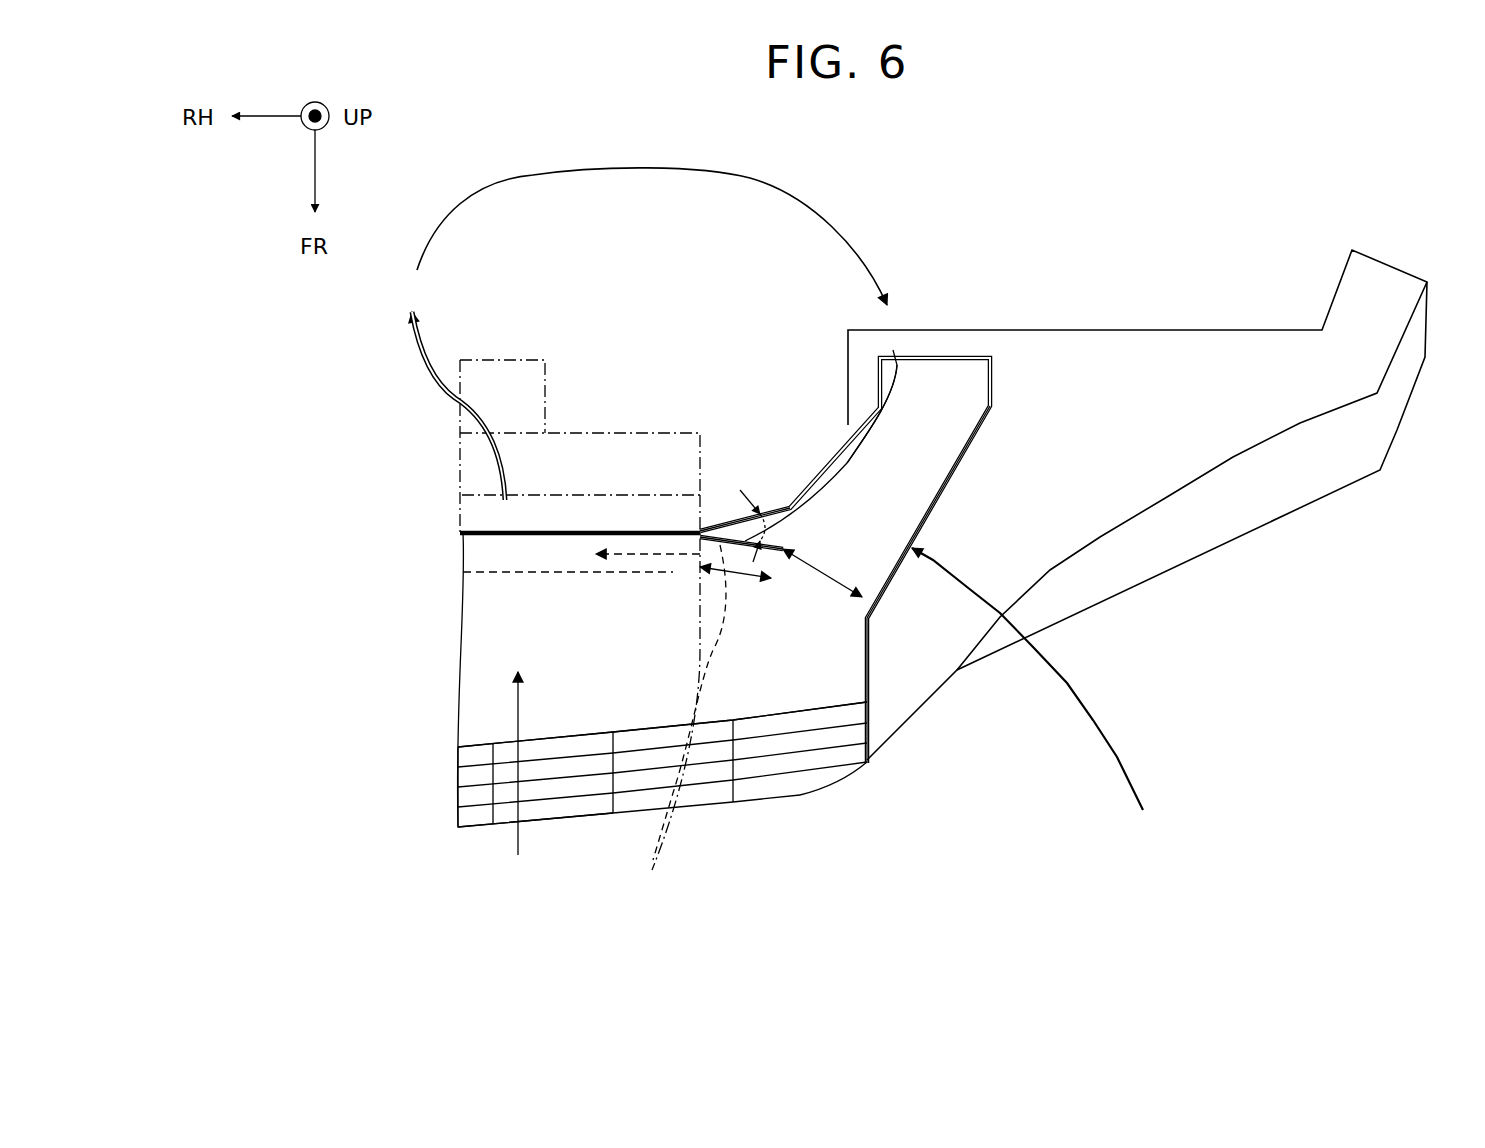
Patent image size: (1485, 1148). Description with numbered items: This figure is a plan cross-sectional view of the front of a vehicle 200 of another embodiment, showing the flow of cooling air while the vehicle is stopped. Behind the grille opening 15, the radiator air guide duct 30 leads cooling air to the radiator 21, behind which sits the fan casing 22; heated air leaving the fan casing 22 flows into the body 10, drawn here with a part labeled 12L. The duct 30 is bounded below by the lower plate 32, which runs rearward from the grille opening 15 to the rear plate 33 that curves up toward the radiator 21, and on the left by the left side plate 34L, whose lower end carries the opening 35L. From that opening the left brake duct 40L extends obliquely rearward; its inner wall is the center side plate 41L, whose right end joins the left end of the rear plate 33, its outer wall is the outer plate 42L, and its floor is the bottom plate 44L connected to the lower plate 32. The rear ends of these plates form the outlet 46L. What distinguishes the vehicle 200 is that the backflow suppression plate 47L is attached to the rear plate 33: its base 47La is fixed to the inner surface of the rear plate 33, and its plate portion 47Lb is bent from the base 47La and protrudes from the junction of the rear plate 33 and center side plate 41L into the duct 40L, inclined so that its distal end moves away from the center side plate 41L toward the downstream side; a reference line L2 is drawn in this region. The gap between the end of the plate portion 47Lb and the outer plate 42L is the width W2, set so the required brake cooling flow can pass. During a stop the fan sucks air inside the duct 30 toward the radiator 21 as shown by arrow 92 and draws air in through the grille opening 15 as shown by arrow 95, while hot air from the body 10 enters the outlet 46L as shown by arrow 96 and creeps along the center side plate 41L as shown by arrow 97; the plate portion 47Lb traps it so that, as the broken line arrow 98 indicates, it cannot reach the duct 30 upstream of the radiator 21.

The vehicle 200 is at (238, 462).
The body 10 is at (1161, 324).
The bumper side face 12L is at (1240, 540).
The grille opening 15 is at (752, 806).
The radiator 21 is at (460, 450).
The fan casing 22 is at (553, 393).
The radiator air guide duct 30 is at (452, 687).
The lower plate 32 is at (483, 708).
The rear plate 33 is at (490, 530).
The left side plate 34L is at (700, 640).
The opening 35L is at (662, 824).
The left brake duct 40L is at (1046, 699).
The center side plate 41L is at (825, 447).
The outer plate 42L is at (950, 487).
The bottom plate 44L is at (835, 674).
The outlet 46L is at (908, 350).
The backflow suppression plate 47L is at (360, 662).
The base 47La is at (697, 546).
The plate portion 47Lb is at (750, 545).
The arrow 92 is at (430, 365).
The arrow 95 is at (517, 840).
The arrow 96 is at (755, 178).
The arrow 97 is at (857, 467).
The broken line arrow 98 is at (633, 553).
The reference line L2 is at (680, 704).
The width W2 is at (808, 560).